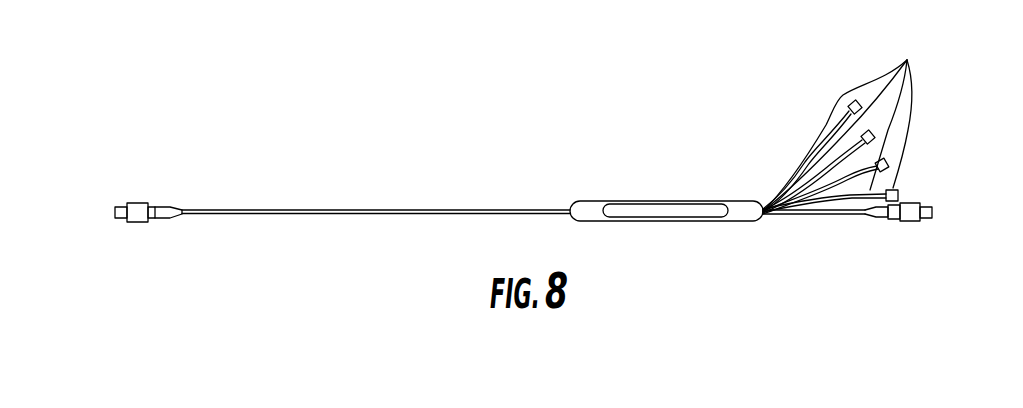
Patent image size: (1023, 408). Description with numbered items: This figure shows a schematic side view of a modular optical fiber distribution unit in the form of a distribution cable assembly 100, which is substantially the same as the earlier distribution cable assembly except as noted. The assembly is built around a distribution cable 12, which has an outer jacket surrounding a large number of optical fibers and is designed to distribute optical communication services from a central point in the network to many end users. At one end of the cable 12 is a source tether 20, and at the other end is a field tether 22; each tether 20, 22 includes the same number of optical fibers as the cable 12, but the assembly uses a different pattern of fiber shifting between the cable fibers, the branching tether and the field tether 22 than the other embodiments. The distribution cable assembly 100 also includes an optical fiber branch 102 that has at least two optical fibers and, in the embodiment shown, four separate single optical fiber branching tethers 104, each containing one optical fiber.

The distribution cable assembly 100 is at (641, 96).
The cable 12 is at (380, 209).
The source tether 20 is at (204, 214).
The field tether 22 is at (890, 221).
The branch 102 is at (770, 155).
The branching tether 104 is at (846, 119).